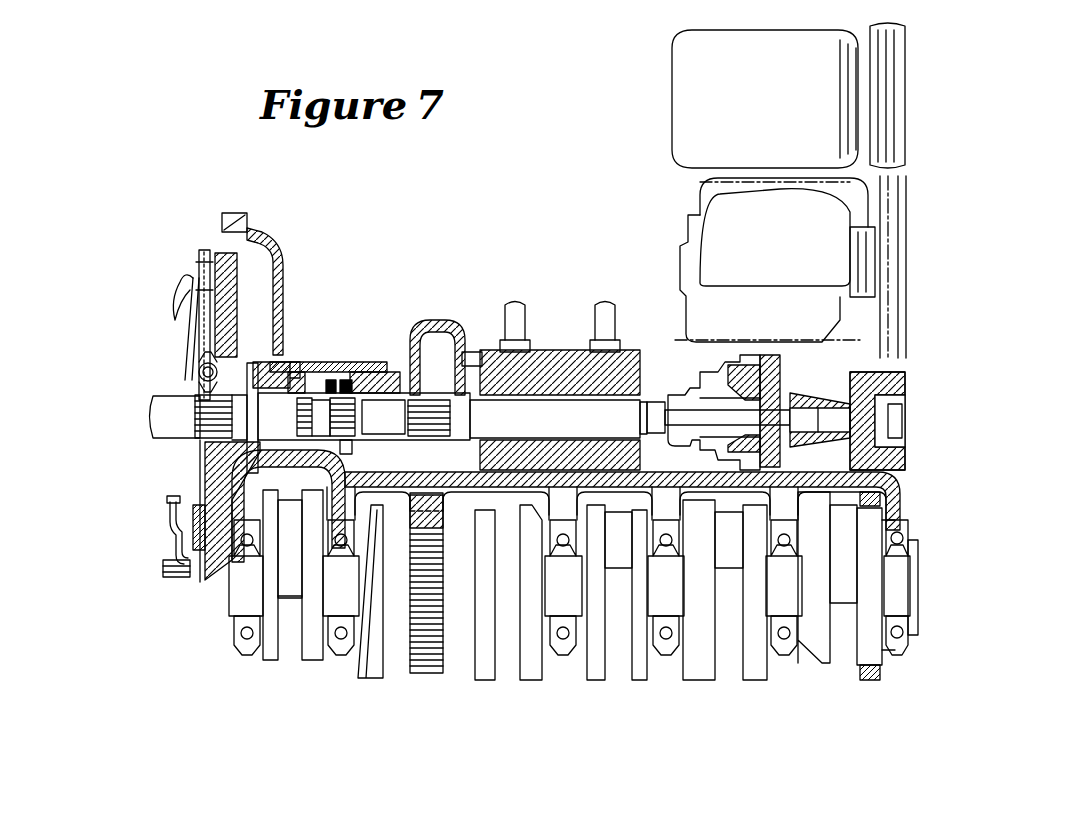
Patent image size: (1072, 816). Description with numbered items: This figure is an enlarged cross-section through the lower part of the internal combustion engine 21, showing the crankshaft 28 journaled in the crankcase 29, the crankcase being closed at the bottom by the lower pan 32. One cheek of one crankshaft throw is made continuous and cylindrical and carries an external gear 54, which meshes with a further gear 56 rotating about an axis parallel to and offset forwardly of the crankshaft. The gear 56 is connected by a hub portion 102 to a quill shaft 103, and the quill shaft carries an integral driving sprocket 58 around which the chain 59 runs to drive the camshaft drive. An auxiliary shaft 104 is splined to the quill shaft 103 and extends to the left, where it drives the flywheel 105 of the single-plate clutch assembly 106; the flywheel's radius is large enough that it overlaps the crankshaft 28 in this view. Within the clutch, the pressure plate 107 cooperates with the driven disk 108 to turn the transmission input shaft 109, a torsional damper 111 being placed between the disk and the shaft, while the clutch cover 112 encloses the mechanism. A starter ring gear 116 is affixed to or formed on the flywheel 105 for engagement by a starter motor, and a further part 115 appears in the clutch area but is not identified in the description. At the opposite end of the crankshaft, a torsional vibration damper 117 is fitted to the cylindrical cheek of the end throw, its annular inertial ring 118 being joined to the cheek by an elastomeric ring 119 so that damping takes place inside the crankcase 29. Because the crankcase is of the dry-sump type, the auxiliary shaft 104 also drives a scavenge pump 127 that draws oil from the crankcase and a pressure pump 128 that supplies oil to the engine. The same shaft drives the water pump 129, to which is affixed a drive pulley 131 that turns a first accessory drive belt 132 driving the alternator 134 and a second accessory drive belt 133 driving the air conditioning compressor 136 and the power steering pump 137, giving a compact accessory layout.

The internal combustion engine 21 is at (300, 728).
The crankshaft 28 is at (905, 600).
The crankcase 29 is at (908, 492).
The lower pan 32 is at (886, 479).
The external gear 54 is at (440, 685).
The gear 56 is at (410, 500).
The driving sprocket 58 is at (326, 390).
The chain 59 is at (352, 390).
The hub portion 102 is at (332, 468).
The quill shaft 103 is at (408, 497).
The auxiliary shaft 104 is at (388, 378).
The flywheel 105 is at (208, 590).
The clutch assembly 106 is at (186, 598).
The pressure plate 107 is at (200, 258).
The driven disk 108 is at (186, 505).
The input shaft 109 is at (152, 440).
The torsional damper 111 is at (195, 358).
The clutch cover 112 is at (165, 562).
The pivot pin 115 is at (192, 382).
The starter ring gear 116 is at (226, 254).
The torsional vibration damper 117 is at (866, 700).
The annular inertial ring 118 is at (870, 680).
The elastomeric ring 119 is at (866, 680).
The scavenge pump 127 is at (490, 345).
The pressure pump 128 is at (595, 358).
The water pump 129 is at (748, 378).
The drive pulley 131 is at (896, 450).
The first accessory drive belt 132 is at (850, 338).
The second accessory drive belt 133 is at (908, 352).
The alternator 134 is at (680, 256).
The air conditioning compressor 136 is at (672, 124).
The power steering pump 137 is at (700, 182).